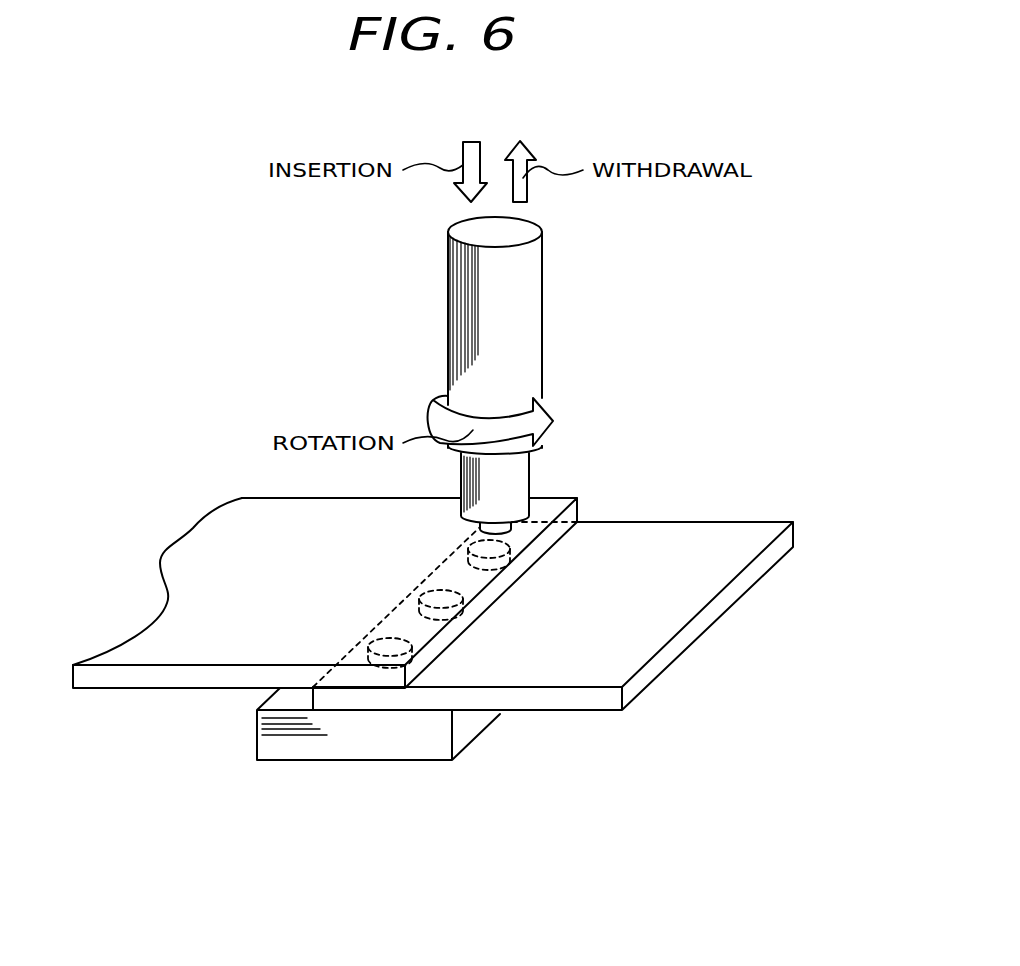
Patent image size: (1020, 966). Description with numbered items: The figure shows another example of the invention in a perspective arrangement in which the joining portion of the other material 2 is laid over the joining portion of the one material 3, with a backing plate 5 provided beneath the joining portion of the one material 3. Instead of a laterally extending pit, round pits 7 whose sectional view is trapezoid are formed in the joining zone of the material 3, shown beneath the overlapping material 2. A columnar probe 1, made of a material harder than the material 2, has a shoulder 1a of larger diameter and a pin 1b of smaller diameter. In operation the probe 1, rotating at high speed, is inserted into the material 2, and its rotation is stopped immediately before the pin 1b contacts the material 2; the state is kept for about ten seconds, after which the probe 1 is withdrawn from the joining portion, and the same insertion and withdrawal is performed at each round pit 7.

The probe 1 is at (525, 297).
The shoulder 1a is at (500, 490).
The pin 1b is at (507, 522).
The other material 2 is at (200, 535).
The one material 3 is at (560, 673).
The backing plate 5 is at (403, 742).
The round pits 7 is at (412, 652).